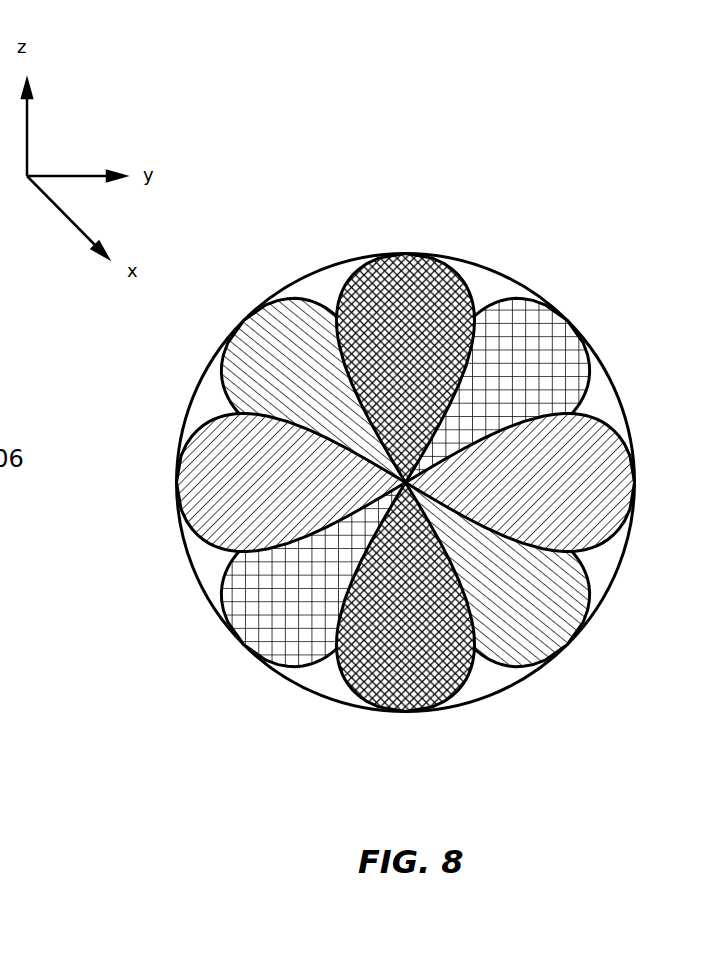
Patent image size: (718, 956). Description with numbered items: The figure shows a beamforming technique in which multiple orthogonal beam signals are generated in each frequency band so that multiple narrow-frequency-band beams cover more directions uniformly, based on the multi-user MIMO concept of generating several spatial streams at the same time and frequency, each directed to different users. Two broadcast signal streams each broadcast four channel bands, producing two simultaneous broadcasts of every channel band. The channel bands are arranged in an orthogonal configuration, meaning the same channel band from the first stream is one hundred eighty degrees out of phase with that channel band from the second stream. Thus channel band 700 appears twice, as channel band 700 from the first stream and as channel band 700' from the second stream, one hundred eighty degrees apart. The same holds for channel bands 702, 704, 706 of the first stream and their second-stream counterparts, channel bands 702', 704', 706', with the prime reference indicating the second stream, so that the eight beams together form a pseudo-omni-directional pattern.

The channel band 700 is at (489, 401).
The channel band of second stream 700' is at (323, 564).
The channel band 702 is at (406, 351).
The channel band of second stream 702' is at (406, 617).
The channel band 704 is at (309, 402).
The channel band of second stream 704' is at (506, 564).
The channel band 706 is at (259, 483).
The channel band of second stream 706' is at (558, 483).